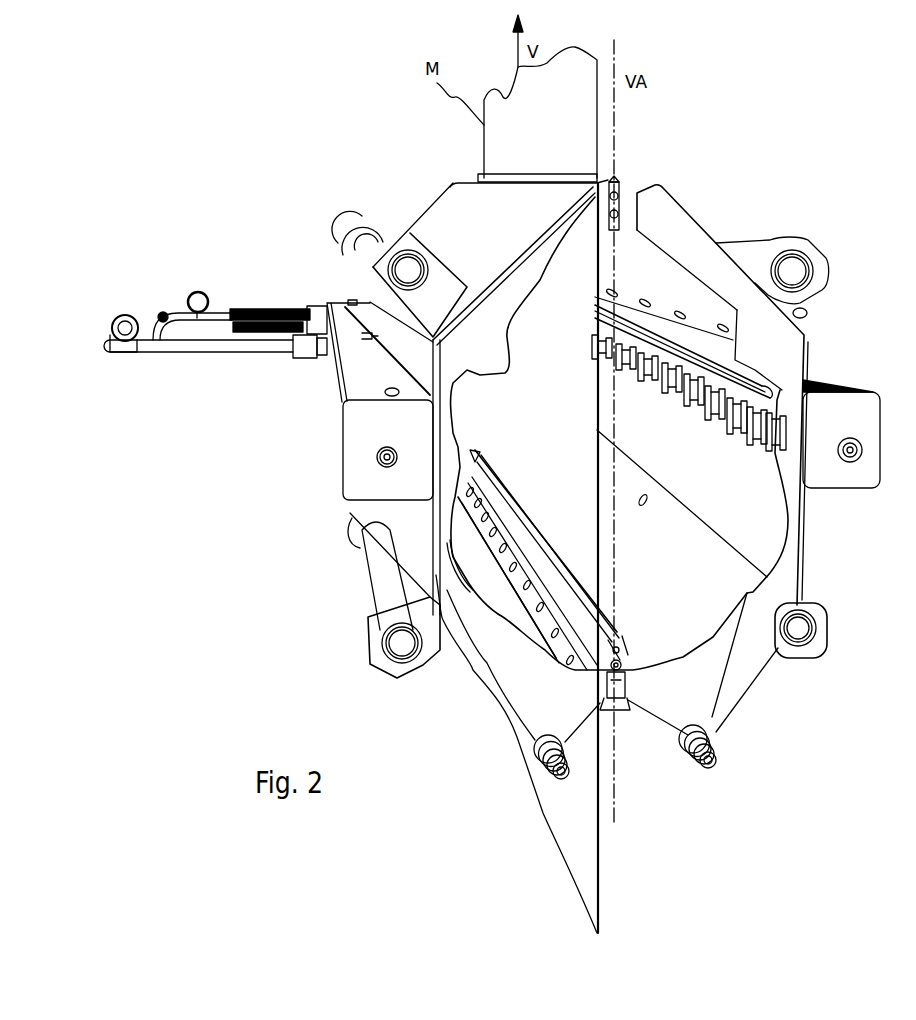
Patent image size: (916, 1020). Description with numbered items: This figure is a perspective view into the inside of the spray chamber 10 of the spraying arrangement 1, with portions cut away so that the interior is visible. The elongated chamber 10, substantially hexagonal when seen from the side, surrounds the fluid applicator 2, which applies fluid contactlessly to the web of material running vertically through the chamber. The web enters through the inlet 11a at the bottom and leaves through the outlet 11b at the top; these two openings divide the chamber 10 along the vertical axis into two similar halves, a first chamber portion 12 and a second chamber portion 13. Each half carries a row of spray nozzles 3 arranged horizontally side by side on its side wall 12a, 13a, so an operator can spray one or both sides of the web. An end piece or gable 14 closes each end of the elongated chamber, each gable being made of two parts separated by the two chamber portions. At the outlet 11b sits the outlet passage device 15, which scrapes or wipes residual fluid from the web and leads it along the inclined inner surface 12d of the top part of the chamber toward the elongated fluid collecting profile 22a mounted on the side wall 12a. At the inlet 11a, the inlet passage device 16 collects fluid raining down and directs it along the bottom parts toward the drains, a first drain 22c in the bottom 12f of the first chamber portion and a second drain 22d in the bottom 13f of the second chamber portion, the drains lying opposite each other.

The spraying arrangement 1 is at (330, 157).
The fluid applicator 2 is at (328, 372).
The spray nozzles 3 is at (763, 437).
The spray chamber 10 is at (440, 197).
The inlet 11a is at (633, 702).
The outlet 11b is at (620, 220).
The first chamber portion 12 is at (693, 227).
The side wall 12a is at (685, 437).
The inner surface 12d is at (674, 285).
The bottom 12f is at (712, 712).
The second chamber portion 13 is at (433, 233).
The side wall 13a is at (582, 655).
The bottom 13f is at (540, 715).
The gable 14 is at (535, 272).
The outlet passage device 15 is at (617, 185).
The inlet passage device 16 is at (618, 640).
The fluid collecting profile 22a is at (770, 388).
The drain 22c is at (713, 740).
The drain 22d is at (545, 752).